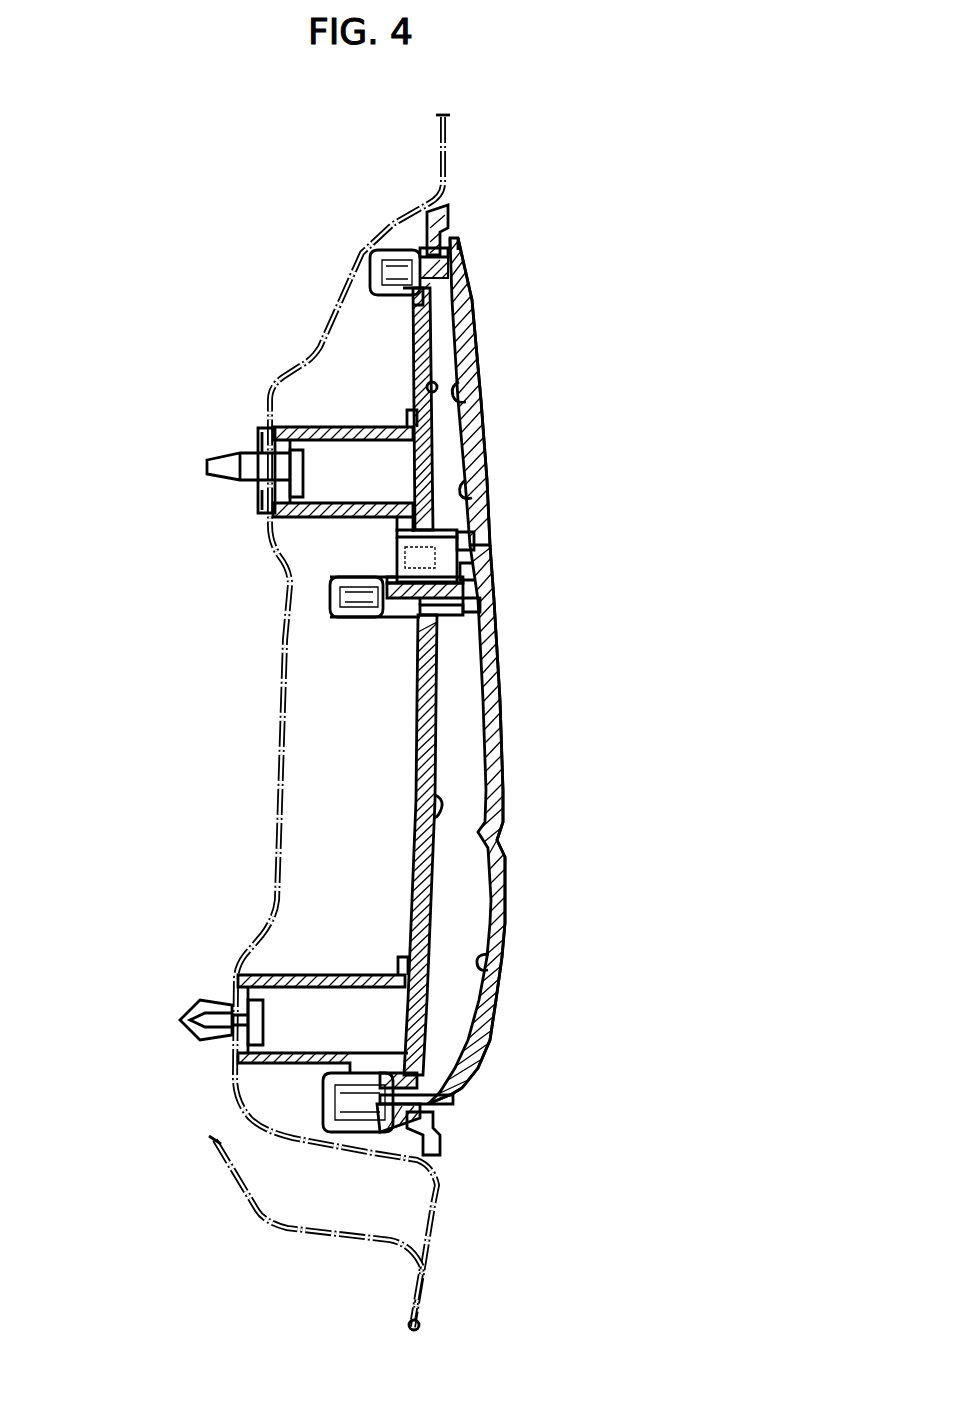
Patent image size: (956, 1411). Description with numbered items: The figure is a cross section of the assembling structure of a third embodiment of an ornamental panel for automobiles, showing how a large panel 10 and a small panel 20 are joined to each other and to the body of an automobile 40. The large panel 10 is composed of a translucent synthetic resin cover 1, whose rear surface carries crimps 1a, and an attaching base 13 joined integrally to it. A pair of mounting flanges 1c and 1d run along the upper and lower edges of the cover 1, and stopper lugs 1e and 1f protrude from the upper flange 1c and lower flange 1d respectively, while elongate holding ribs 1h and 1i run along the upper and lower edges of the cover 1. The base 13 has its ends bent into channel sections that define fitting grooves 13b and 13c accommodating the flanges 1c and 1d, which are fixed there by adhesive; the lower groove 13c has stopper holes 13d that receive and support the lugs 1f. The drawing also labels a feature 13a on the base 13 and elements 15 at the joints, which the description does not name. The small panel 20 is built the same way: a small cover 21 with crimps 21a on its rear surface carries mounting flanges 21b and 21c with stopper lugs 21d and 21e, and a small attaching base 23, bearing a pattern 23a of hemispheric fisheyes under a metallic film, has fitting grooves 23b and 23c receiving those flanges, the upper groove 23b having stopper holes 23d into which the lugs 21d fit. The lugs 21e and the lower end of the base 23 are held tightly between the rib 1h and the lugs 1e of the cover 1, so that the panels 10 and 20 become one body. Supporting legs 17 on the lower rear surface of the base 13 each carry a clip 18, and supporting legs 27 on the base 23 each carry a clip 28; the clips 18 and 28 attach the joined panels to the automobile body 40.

The synthetic resin cover 1 is at (503, 872).
The crimps 1a is at (493, 963).
The mounting flange 1c is at (353, 617).
The mounting flange 1d is at (330, 1122).
The stopper lug 1e is at (330, 583).
The stopper lug 1f is at (433, 1165).
The holding rib 1h is at (487, 567).
The holding rib 1i is at (450, 1108).
The large panel 10 is at (497, 1008).
The attaching base 13 is at (415, 862).
The projection 13a is at (428, 807).
The fitting groove 13b is at (375, 625).
The fitting groove 13c is at (378, 1078).
The stopper hole 13d is at (387, 1133).
The clip 15 is at (387, 270).
The supporting leg 17 is at (295, 975).
The clip 18 is at (180, 1020).
The small panel 20 is at (480, 357).
The small synthetic resin cover 21 is at (485, 473).
The crimps 21a is at (465, 393).
The mounting flange 21b is at (413, 247).
The mounting flange 21c is at (397, 563).
The stopper lug 21d is at (456, 248).
The stopper lug 21e is at (487, 605).
The small attaching base 23 is at (325, 350).
The pattern 23a is at (427, 387).
The fitting groove 23b is at (410, 287).
The fitting groove 23c is at (487, 552).
The stopper hole 23d is at (413, 250).
The supporting leg 27 is at (270, 423).
The clip 28 is at (207, 467).
The automobile body 40 is at (433, 1233).